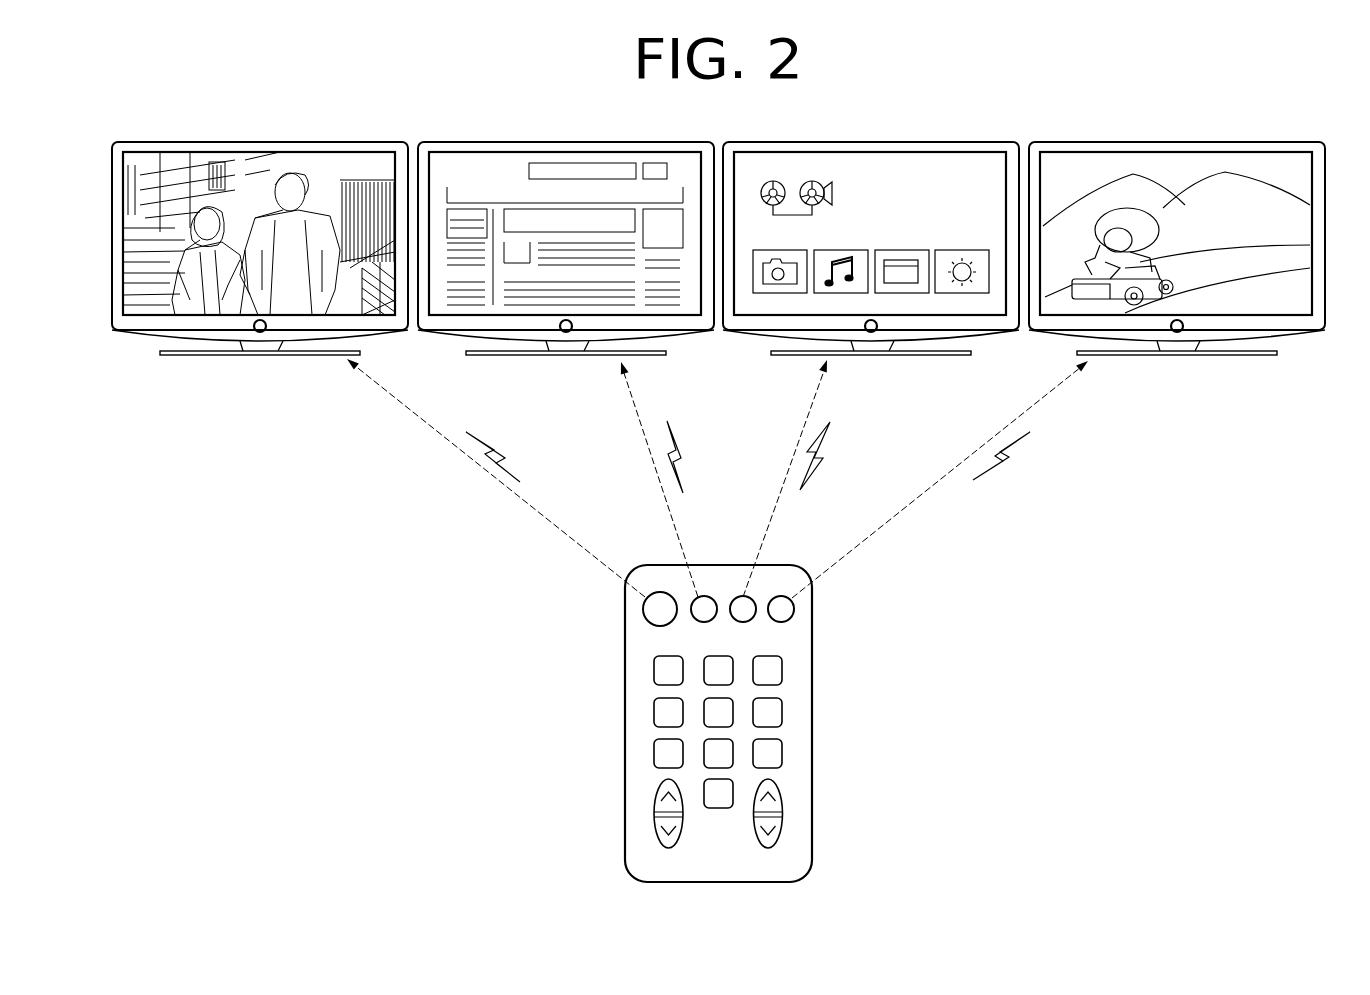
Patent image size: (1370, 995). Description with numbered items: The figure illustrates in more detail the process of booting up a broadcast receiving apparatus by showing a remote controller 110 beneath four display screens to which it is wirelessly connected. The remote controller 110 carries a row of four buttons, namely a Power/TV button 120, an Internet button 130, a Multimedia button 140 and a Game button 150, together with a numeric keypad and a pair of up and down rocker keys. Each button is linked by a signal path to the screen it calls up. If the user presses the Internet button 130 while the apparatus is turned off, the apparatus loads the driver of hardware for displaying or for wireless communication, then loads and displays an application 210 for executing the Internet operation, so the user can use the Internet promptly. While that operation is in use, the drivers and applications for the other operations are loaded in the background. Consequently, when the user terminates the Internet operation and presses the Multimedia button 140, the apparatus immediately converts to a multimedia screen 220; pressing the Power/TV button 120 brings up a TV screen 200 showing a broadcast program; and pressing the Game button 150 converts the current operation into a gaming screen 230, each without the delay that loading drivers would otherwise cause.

The remote controller 110 is at (812, 752).
The Power/TV button 120 is at (643, 609).
The Internet button 130 is at (704, 596).
The Multimedia button 140 is at (743, 596).
The Game button 150 is at (794, 609).
The TV screen 200 is at (266, 156).
The application for executing the Internet operation 210 is at (572, 156).
The multimedia screen 220 is at (878, 156).
The gaming screen 230 is at (1183, 156).